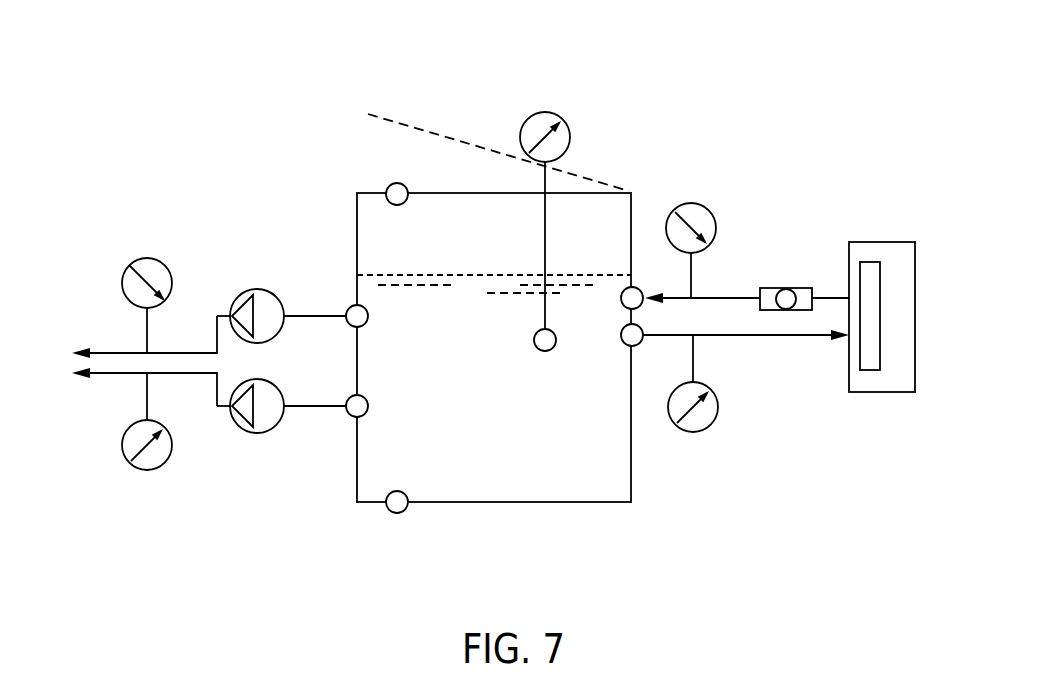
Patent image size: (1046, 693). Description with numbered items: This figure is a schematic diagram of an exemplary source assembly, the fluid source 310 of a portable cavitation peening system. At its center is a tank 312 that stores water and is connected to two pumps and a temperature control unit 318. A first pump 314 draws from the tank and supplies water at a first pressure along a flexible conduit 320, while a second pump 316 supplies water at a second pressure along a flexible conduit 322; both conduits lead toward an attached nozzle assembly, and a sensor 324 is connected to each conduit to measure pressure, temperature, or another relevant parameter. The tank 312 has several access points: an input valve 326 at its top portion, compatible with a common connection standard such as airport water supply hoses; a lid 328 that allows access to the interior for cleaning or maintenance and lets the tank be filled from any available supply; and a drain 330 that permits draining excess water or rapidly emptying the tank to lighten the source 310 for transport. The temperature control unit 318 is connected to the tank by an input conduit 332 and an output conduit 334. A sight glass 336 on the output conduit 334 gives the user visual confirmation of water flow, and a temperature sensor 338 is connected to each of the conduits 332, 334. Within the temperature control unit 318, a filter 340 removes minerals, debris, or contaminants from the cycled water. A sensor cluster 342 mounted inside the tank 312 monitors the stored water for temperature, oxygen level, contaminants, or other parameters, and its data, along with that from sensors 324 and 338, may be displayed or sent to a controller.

The fluid source 310 is at (324, 76).
The tank 312 is at (565, 503).
The first pump 314 is at (246, 290).
The second pump 316 is at (250, 432).
The temperature control unit 318 is at (880, 242).
The flexible conduit 320 is at (117, 352).
The flexible conduit 322 is at (110, 376).
The sensor 324 is at (142, 258).
The input valve 326 is at (392, 184).
The lid 328 is at (570, 170).
The drain 330 is at (397, 513).
The input conduit 332 is at (755, 335).
The output conduit 334 is at (727, 298).
The sight glass 336 is at (800, 288).
The temperature sensor 338 is at (690, 203).
The filter 340 is at (868, 372).
The sensor cluster 342 is at (533, 338).